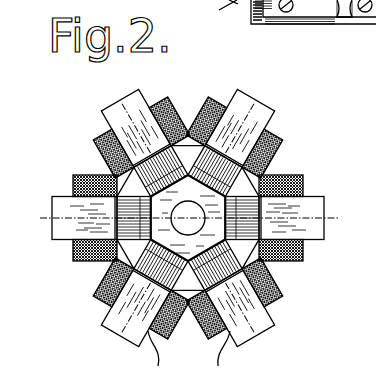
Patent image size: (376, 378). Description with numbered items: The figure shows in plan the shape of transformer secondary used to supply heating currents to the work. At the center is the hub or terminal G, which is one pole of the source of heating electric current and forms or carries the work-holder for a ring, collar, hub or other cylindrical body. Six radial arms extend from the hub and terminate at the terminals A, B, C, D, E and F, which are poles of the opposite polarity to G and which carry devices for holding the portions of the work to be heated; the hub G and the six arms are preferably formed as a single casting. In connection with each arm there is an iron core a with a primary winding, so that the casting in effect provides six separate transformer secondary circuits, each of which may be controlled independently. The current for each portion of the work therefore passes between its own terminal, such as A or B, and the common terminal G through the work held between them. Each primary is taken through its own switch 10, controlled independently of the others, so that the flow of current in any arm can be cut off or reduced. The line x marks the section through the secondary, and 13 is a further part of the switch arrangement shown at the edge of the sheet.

The terminal A is at (258, 112).
The terminal B is at (324, 237).
The terminal C is at (249, 336).
The terminal D is at (136, 337).
The terminal E is at (54, 232).
The terminal F is at (122, 110).
The iron core a is at (303, 180).
The terminal G is at (198, 223).
The section line x is at (187, 216).
The screw 13 is at (323, 0).
The switch 10 is at (348, 12).